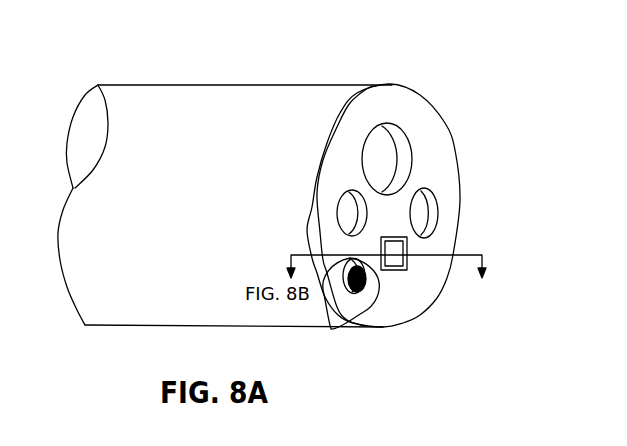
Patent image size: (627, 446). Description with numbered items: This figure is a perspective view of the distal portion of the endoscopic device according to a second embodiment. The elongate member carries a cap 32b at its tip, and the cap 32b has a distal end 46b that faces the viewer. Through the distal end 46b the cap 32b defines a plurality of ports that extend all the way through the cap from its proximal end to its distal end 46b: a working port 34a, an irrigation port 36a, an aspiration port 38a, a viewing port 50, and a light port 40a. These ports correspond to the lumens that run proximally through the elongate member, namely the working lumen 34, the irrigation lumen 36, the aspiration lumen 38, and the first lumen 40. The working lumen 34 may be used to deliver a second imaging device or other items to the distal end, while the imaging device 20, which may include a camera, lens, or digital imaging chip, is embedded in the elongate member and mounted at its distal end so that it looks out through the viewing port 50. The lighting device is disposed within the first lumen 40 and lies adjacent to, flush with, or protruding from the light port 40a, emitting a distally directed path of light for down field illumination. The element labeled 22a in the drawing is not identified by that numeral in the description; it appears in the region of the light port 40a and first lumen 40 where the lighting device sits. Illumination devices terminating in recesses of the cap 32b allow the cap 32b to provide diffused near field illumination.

The imaging device 20 is at (405, 268).
The tube 22a is at (331, 329).
The cap 32b is at (371, 84).
The working lumen 34 is at (384, 140).
The working port 34a is at (407, 153).
The irrigation lumen 36 is at (426, 210).
The irrigation port 36a is at (436, 205).
The aspiration lumen 38 is at (354, 200).
The aspiration port 38a is at (338, 207).
The first lumen 40 is at (344, 265).
The light port 40a is at (358, 295).
The distal end of cap 46b is at (420, 105).
The viewing port 50 is at (390, 268).